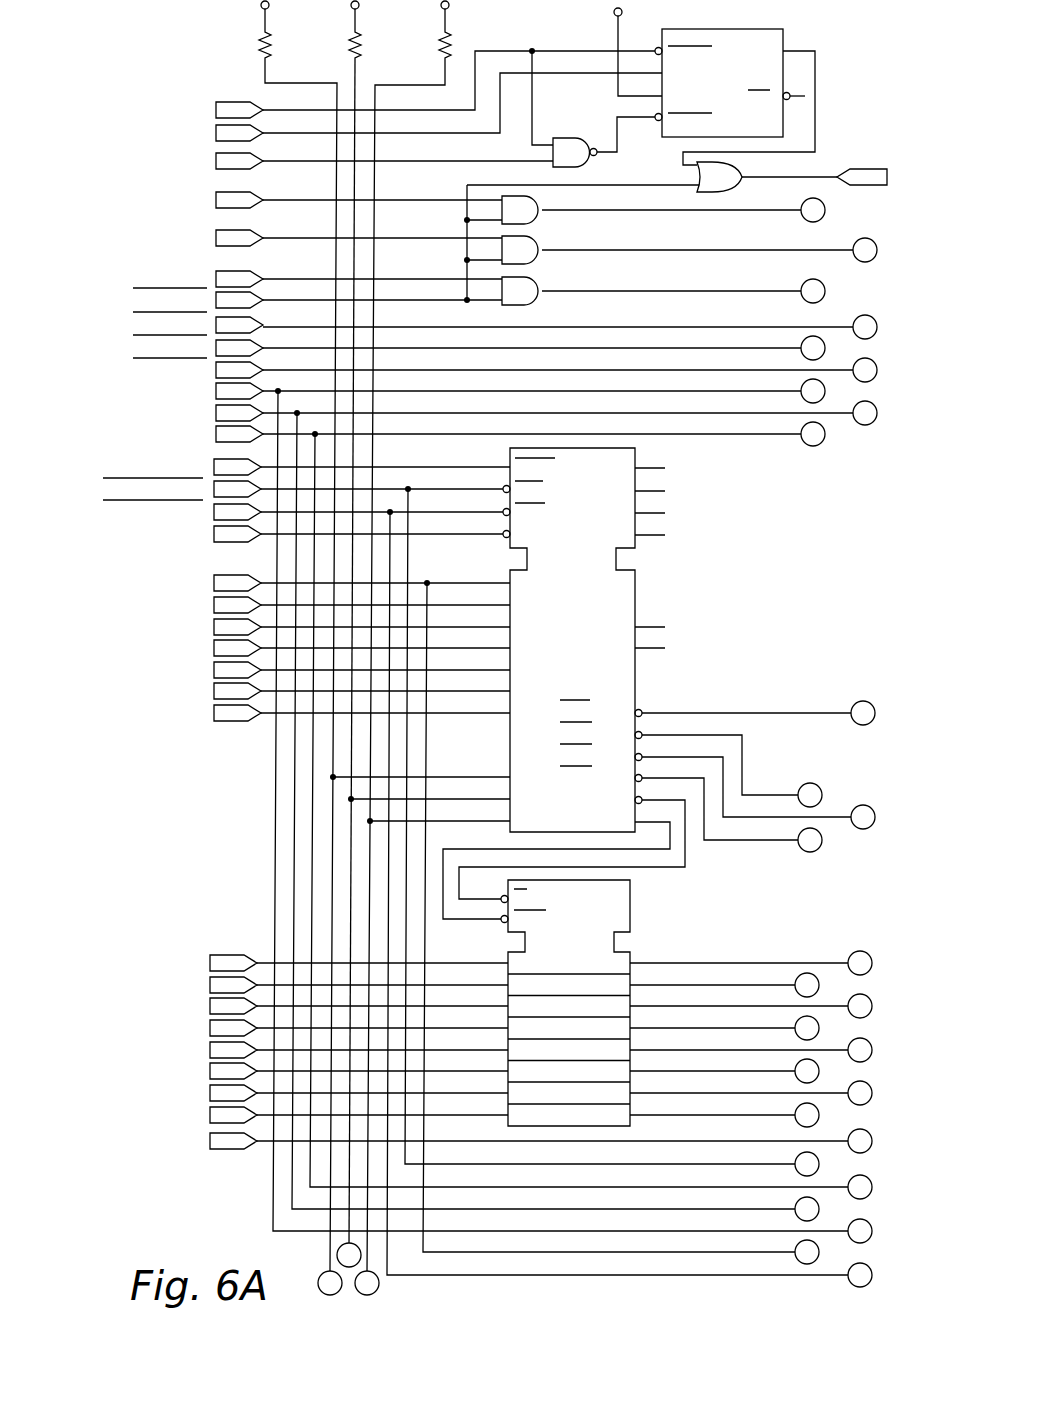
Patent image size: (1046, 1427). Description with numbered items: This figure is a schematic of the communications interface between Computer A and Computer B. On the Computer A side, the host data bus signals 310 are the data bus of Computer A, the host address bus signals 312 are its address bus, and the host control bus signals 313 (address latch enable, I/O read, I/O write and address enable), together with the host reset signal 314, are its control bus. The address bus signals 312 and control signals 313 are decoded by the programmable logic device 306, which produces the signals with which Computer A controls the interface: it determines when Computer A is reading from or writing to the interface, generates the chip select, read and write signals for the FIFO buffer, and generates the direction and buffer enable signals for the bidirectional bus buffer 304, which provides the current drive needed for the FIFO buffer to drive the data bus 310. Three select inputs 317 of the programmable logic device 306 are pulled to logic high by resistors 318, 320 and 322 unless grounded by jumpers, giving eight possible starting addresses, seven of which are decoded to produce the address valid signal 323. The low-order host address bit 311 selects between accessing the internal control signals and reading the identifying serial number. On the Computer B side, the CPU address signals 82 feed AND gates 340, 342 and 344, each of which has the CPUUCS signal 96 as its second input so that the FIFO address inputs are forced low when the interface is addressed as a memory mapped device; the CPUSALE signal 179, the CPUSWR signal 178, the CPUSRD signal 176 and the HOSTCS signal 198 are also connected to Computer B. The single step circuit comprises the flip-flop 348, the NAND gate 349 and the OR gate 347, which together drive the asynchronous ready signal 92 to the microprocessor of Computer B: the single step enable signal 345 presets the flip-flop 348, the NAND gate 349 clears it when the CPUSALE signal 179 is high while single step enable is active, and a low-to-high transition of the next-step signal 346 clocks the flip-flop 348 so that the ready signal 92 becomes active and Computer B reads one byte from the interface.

The pullup resistor 318 is at (258, 45).
The pullup resistor 320 is at (354, 45).
The pullup resistor 322 is at (439, 46).
The SSEN signal input 345 is at (162, 106).
The NEXTSTEP signal input 346 is at (120, 133).
The CPUSALE signal 179 is at (129, 163).
The CPU address signals 82 is at (148, 273).
The /CPUUCS signal 96 is at (130, 299).
The /CPUSWR signal 178 is at (132, 324).
The /CPUSRD signal 176 is at (132, 342).
The /HOSTCS signal 198 is at (132, 367).
The address bit A1 311 is at (128, 409).
The control bus signals 313 is at (108, 512).
The address bus signals 312 is at (114, 654).
The data bus signals 310 is at (114, 1030).
The HOST RESET signal 314 is at (108, 1156).
The flip-flop 348 is at (736, 29).
The NAND gate 349 is at (580, 138).
The OR gate 347 is at (702, 190).
The ARDY signal 92 is at (925, 164).
The AND gate 344 is at (544, 216).
The AND gate 342 is at (544, 260).
The AND gate 340 is at (534, 300).
The programmable logic device 306 is at (659, 681).
The address valid signal 323 is at (687, 710).
The select inputs 317 is at (534, 770).
The bidirectional bus buffer 304 is at (671, 1001).